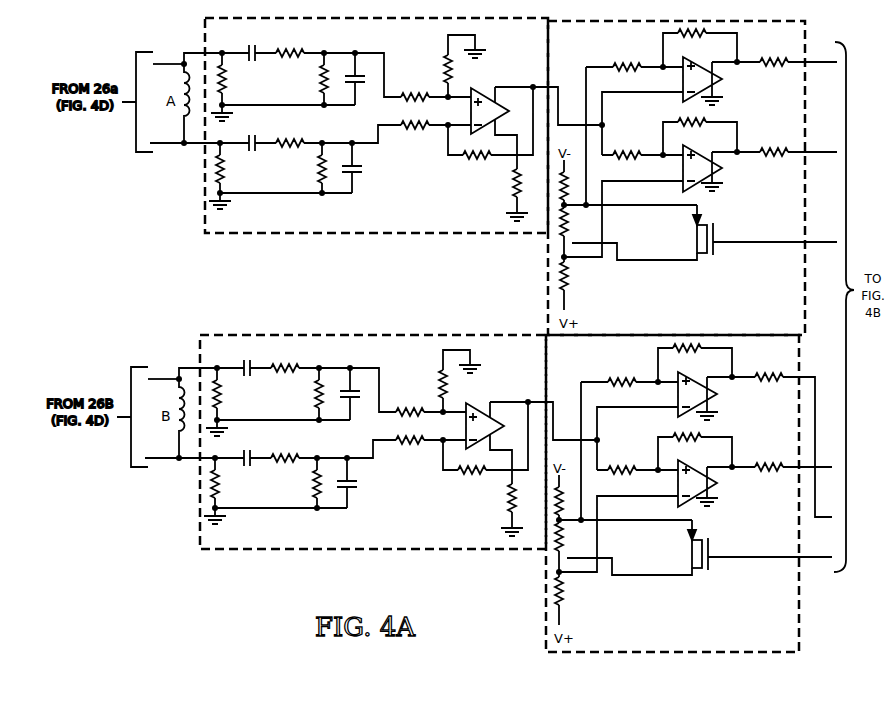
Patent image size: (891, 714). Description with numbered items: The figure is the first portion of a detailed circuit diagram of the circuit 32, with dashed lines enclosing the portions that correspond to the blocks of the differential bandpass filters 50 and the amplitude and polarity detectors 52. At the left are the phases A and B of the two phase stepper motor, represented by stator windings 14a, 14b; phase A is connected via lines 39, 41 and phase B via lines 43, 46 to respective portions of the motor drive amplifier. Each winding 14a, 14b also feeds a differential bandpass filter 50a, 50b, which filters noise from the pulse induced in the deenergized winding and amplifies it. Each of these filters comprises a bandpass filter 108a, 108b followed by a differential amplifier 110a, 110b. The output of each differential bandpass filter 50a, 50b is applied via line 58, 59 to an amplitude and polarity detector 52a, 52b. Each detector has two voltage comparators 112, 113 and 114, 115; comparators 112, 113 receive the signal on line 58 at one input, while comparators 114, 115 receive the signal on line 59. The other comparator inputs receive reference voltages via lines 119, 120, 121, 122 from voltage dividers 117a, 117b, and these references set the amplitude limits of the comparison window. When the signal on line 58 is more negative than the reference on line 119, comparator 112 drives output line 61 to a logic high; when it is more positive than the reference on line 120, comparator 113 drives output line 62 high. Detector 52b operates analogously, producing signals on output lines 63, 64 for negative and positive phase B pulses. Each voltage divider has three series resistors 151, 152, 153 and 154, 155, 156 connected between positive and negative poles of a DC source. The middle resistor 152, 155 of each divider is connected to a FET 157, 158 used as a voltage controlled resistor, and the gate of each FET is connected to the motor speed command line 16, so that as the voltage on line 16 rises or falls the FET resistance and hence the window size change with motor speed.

The stator winding 14a is at (180, 112).
The stator winding 14b is at (134, 418).
The line 39 is at (167, 70).
The line 41 is at (165, 150).
The line 43 is at (148, 364).
The line 46 is at (151, 476).
The circuit 32 is at (190, 282).
The differential bandpass filters 50 is at (244, 350).
The differential bandpass filter 50a is at (296, 24).
The differential bandpass filter 50b is at (296, 346).
The amplitude and polarity detectors 52 is at (548, 352).
The amplitude and polarity detector 52a is at (583, 27).
The amplitude and polarity detector 52b is at (546, 566).
The bandpass filter 108a is at (300, 126).
The bandpass filter 108b is at (322, 442).
The differential amplifier 110a is at (486, 96).
The differential amplifier 110b is at (485, 443).
The line 119 is at (586, 96).
The line 120 is at (639, 158).
The line 121 is at (618, 444).
The line 122 is at (637, 458).
The line 58 is at (572, 131).
The line 59 is at (603, 436).
The voltage comparator 112 is at (703, 66).
The voltage comparator 113 is at (703, 156).
The voltage comparator 114 is at (720, 382).
The voltage comparator 115 is at (671, 502).
The output line 61 is at (793, 64).
The output line 62 is at (793, 154).
The output line 63 is at (788, 379).
The output line 64 is at (788, 469).
The series resistor 151 is at (568, 177).
The middle resistor 152 is at (568, 241).
The series resistor 153 is at (568, 292).
The series resistor 154 is at (591, 499).
The middle resistor 155 is at (598, 547).
The series resistor 156 is at (588, 601).
The voltage divider 117a is at (583, 219).
The voltage divider 117b is at (627, 538).
The FET 157 is at (717, 232).
The FET 158 is at (731, 549).
The motor speed command line 16 is at (782, 244).